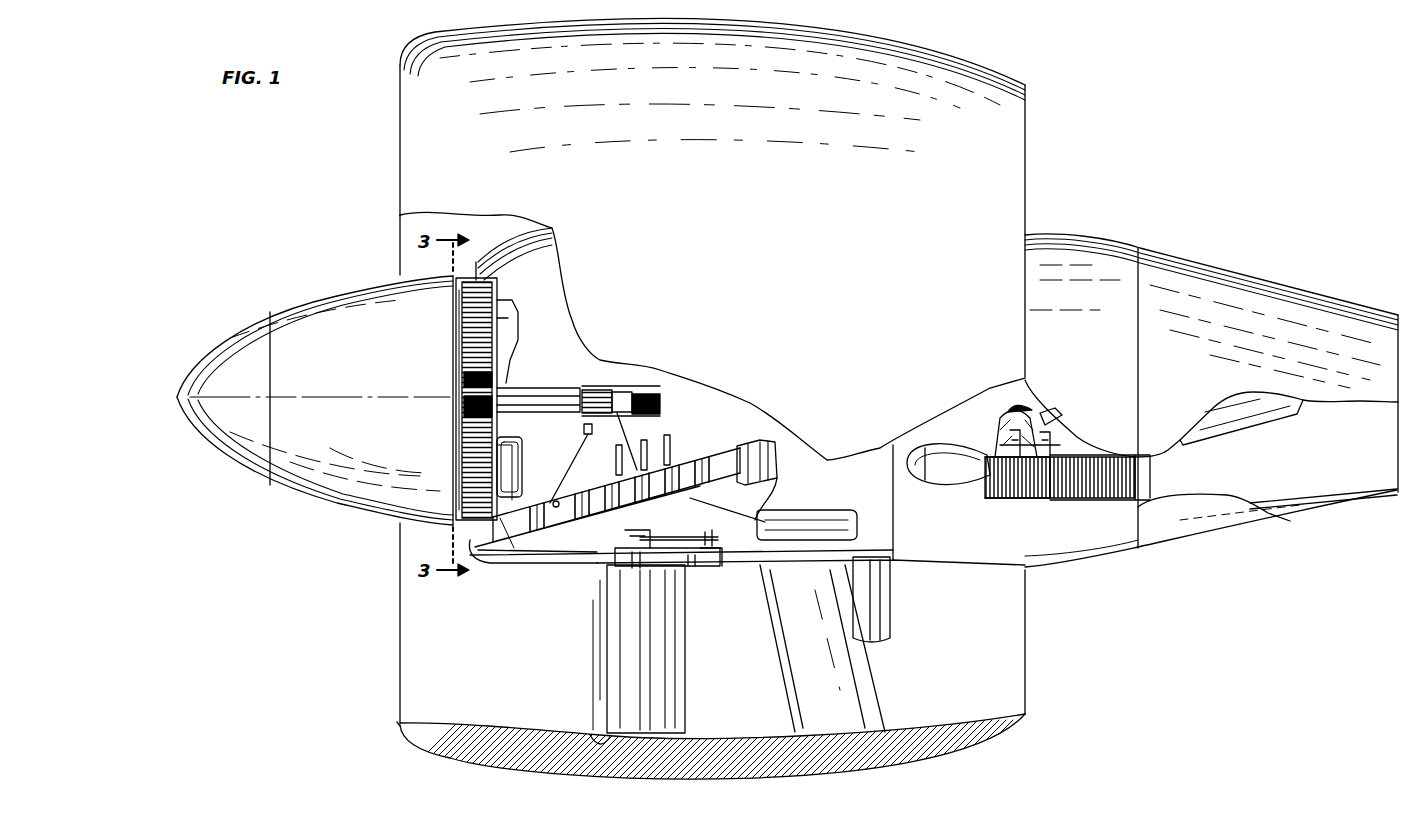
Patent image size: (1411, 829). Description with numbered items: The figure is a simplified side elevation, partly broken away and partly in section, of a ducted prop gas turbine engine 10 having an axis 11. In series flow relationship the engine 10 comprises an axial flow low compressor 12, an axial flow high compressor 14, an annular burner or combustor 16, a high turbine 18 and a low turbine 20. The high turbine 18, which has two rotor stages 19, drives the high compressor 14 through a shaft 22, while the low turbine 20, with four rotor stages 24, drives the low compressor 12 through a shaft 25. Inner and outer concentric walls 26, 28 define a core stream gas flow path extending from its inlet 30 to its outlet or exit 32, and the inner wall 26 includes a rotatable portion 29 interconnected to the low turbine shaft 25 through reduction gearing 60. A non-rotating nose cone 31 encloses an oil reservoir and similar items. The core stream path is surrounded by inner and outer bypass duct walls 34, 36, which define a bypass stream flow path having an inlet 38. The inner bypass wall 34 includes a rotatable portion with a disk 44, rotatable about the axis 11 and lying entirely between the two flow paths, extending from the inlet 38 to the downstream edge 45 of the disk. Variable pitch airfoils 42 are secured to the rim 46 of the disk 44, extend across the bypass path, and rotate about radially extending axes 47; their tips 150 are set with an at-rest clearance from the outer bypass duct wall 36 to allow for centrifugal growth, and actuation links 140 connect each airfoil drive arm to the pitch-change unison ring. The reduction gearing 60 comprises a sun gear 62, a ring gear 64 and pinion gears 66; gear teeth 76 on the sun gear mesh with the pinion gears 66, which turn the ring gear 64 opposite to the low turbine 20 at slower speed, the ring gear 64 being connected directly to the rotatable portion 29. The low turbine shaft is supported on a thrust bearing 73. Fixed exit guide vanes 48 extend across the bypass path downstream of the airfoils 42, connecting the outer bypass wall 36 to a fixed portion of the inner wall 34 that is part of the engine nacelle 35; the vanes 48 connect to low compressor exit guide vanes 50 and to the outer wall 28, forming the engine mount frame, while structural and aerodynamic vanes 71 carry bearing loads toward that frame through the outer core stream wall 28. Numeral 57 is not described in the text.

The ducted prop gas turbine engine 10 is at (335, 160).
The axis 11 is at (555, 398).
The axial flow low compressor 12 is at (612, 470).
The axial flow high compressor 14 is at (780, 465).
The annular burner or combustor 16 is at (942, 488).
The high turbine 18 is at (1010, 445).
The rotor stages 19 is at (1030, 468).
The low turbine 20 is at (1128, 500).
The shaft 22 is at (1020, 405).
The rotor stages 24 is at (1062, 488).
The shaft 25 is at (650, 394).
The inner concentric wall 26 is at (558, 500).
The outer concentric wall 28 is at (1318, 488).
The rotatable portion 29 is at (511, 530).
The inlet 30 is at (470, 548).
The non-rotating nose cone 31 is at (345, 517).
The outlet or exit 32 is at (1392, 437).
The inner bypass duct wall 34 is at (702, 565).
The engine nacelle 35 is at (395, 735).
The outer bypass duct wall 36 is at (526, 736).
The inlet 38 is at (706, 409).
The airfoils 42 is at (640, 695).
The disk 44 is at (630, 550).
The downstream edge 45 is at (690, 570).
The rim 46 is at (640, 566).
The radially extending axes 47 is at (650, 640).
The fixed exit guide vanes 48 is at (848, 528).
The low compressor exit guide vanes 50 is at (744, 462).
The link 57 is at (685, 510).
The reduction gearing 60 is at (530, 448).
The sun gear 62 is at (525, 388).
The ring gear 64 is at (486, 274).
The pinion gears 66 is at (460, 341).
The structural and aerodynamic vanes 71 is at (619, 494).
The thrust bearing 73 is at (586, 432).
The gear teeth 76 is at (462, 382).
The actuation links 140 is at (679, 529).
The airfoil tips 150 is at (592, 740).